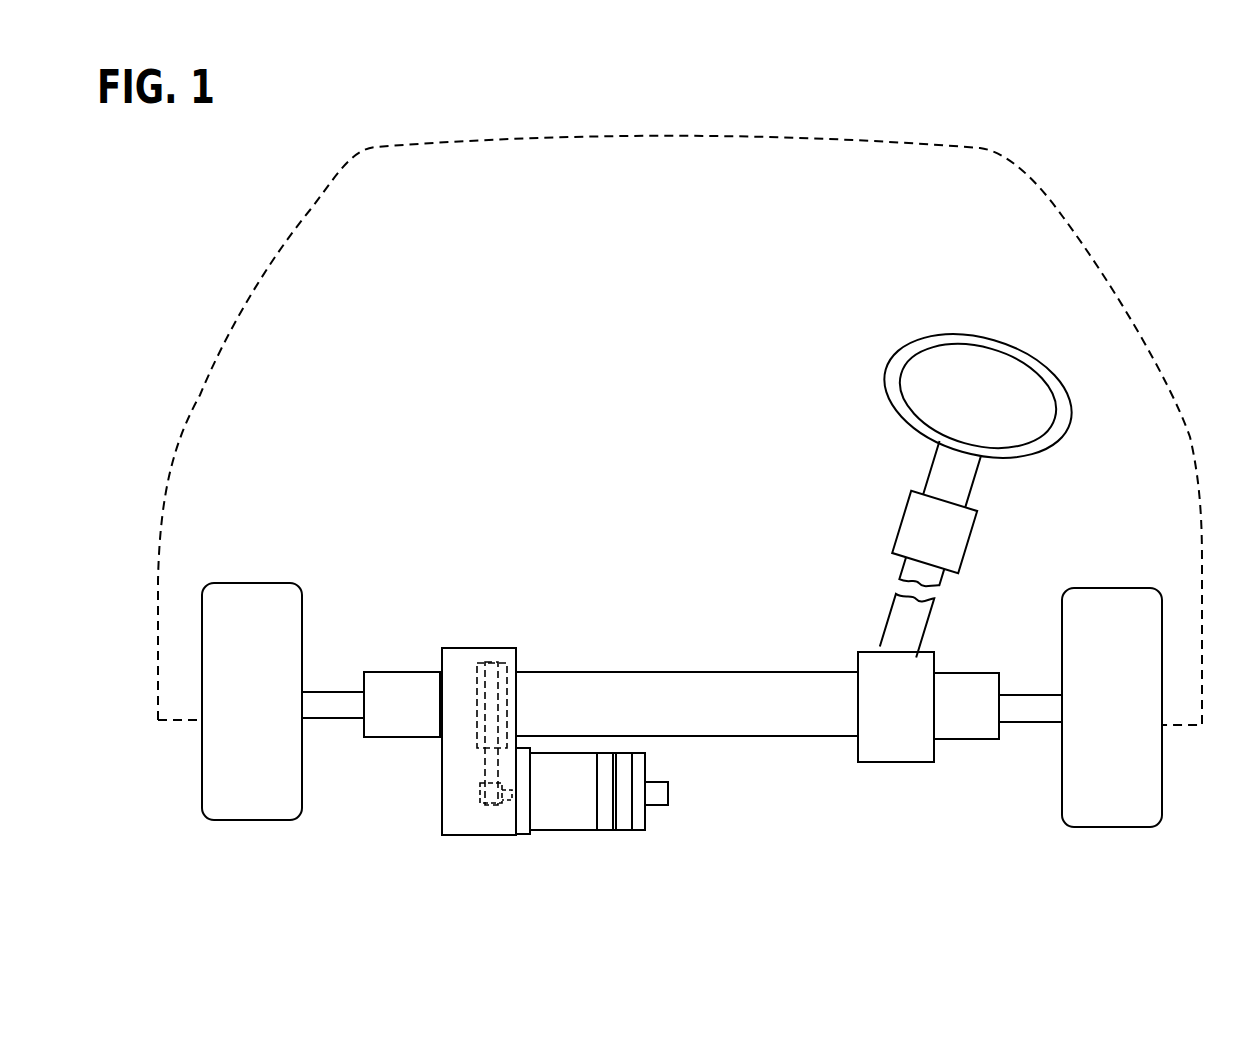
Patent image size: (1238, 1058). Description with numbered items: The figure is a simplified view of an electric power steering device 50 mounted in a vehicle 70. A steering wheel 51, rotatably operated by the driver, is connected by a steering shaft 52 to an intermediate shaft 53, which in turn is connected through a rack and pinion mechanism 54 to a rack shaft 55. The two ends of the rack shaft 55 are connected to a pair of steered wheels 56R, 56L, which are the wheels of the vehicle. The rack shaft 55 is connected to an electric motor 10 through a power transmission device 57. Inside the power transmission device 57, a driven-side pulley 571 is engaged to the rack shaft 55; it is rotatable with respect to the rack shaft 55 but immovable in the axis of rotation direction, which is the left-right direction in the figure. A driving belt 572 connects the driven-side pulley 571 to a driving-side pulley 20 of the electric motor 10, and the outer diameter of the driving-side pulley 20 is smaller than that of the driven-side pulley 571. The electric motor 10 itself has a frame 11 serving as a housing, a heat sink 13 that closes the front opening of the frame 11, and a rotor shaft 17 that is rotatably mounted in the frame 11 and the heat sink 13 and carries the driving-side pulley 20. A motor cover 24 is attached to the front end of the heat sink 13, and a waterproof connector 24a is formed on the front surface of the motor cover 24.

The vehicle 70 is at (236, 247).
The electric power steering device 50 is at (622, 451).
The steering wheel 51 is at (890, 355).
The steering shaft 52 is at (925, 475).
The intermediate shaft 53 is at (880, 625).
The rack and pinion mechanism 54 is at (916, 757).
The rack shaft 55 is at (657, 672).
The steered wheel 56L is at (252, 586).
The steered wheel 56R is at (1112, 590).
The power transmission device 57 is at (480, 648).
The driven-side pulley 571 is at (518, 667).
The driving belt 572 is at (477, 700).
The rotor shaft 17 is at (490, 824).
The driving-side pulley 20 is at (480, 833).
The electric motor 10 is at (556, 830).
The frame 11 is at (603, 830).
The heat sink 13 is at (619, 832).
The motor cover 24 is at (645, 832).
The waterproof connector 24a is at (668, 790).